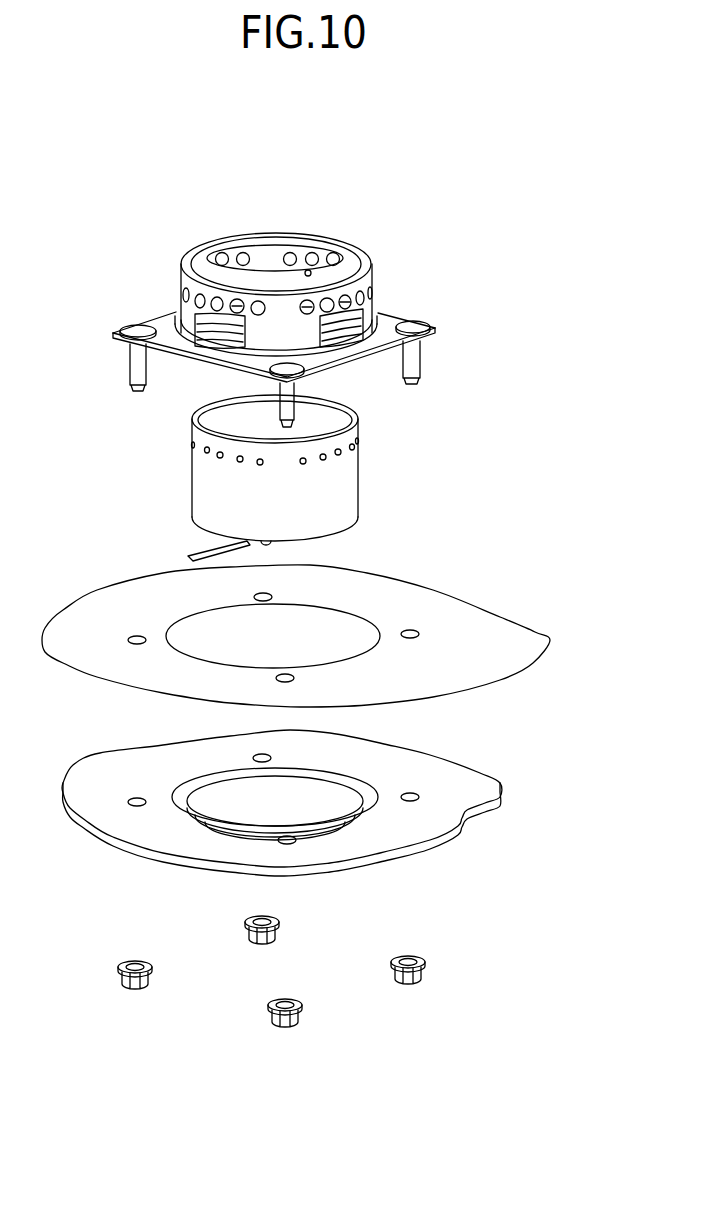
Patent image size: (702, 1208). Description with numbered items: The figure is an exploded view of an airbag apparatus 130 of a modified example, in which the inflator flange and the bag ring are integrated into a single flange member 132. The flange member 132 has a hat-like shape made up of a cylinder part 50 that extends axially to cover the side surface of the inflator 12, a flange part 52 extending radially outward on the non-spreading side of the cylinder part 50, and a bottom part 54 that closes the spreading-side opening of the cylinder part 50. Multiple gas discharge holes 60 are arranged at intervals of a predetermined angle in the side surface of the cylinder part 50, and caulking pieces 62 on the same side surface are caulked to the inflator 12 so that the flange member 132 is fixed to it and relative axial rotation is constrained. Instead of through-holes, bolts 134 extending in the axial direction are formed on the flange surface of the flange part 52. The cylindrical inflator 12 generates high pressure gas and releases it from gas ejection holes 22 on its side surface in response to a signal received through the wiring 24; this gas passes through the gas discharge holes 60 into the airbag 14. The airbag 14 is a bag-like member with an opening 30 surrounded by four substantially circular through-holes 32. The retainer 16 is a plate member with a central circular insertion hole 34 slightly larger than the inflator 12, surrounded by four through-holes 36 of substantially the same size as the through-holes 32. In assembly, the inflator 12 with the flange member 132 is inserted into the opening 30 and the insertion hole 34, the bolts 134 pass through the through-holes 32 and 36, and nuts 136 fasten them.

The airbag apparatus 130 is at (487, 263).
The cylinder part 50 is at (183, 280).
The bottom part 54 is at (322, 236).
The gas discharge holes 60 is at (217, 298).
The flange member 132 is at (372, 284).
The caulking pieces 62 is at (217, 333).
The flange part 52 is at (160, 323).
The bolts 134 is at (420, 357).
The inflator 12 is at (360, 484).
The gas ejection holes 22 is at (195, 449).
The wiring 24 is at (200, 546).
The airbag 14 is at (500, 680).
The opening 30 is at (327, 628).
The through-holes 32 is at (410, 635).
The retainer 16 is at (427, 753).
The insertion hole 34 is at (288, 788).
The through-holes 36 is at (137, 803).
The nuts 136 is at (152, 962).